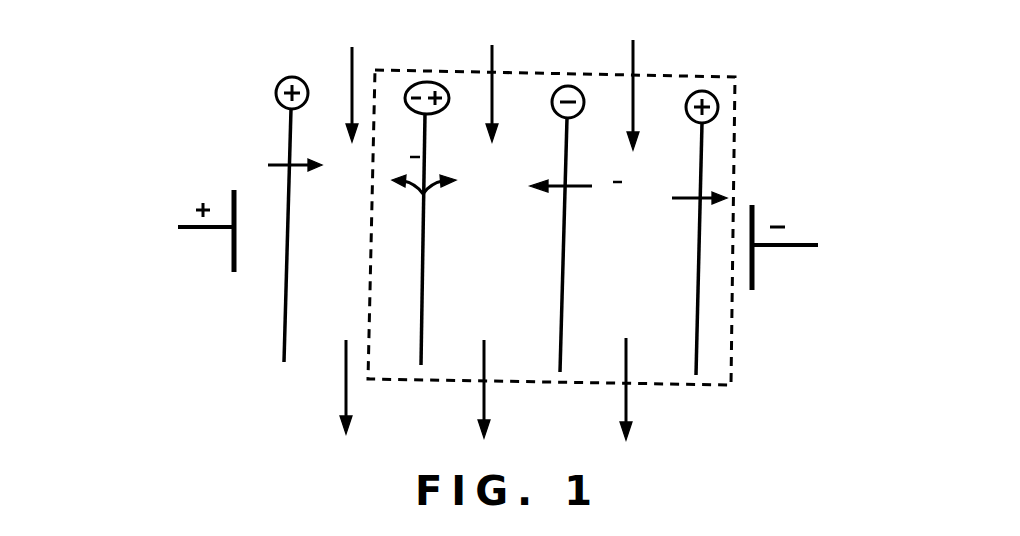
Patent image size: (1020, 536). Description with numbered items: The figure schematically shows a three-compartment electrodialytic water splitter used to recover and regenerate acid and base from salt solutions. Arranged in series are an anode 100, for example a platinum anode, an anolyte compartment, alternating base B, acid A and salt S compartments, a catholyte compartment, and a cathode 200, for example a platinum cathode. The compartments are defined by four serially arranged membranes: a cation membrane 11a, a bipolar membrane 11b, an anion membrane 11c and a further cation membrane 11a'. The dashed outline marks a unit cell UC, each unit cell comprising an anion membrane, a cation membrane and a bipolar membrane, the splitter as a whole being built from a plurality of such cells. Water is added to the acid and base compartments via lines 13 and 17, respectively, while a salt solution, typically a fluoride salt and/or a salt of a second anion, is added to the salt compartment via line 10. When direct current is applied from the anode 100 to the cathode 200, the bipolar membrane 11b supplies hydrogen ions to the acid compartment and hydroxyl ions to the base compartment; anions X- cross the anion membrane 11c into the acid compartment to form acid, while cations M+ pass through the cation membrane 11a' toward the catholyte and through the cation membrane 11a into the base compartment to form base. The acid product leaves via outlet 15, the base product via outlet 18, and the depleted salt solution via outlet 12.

The salt solution feed line 10 is at (633, 42).
The depleted salt solution outlet 12 is at (617, 398).
The acid compartment feed line 13 is at (493, 45).
The acid product outlet 15 is at (483, 407).
The base compartment feed line 17 is at (353, 47).
The base product outlet 18 is at (345, 385).
The anode 100 is at (231, 200).
The cathode 200 is at (758, 215).
The cation membrane 11a is at (275, 219).
The cation membrane 11a' is at (683, 233).
The bipolar membrane 11b is at (420, 322).
The anion membrane 11c is at (558, 330).
The unit cell UC is at (668, 90).